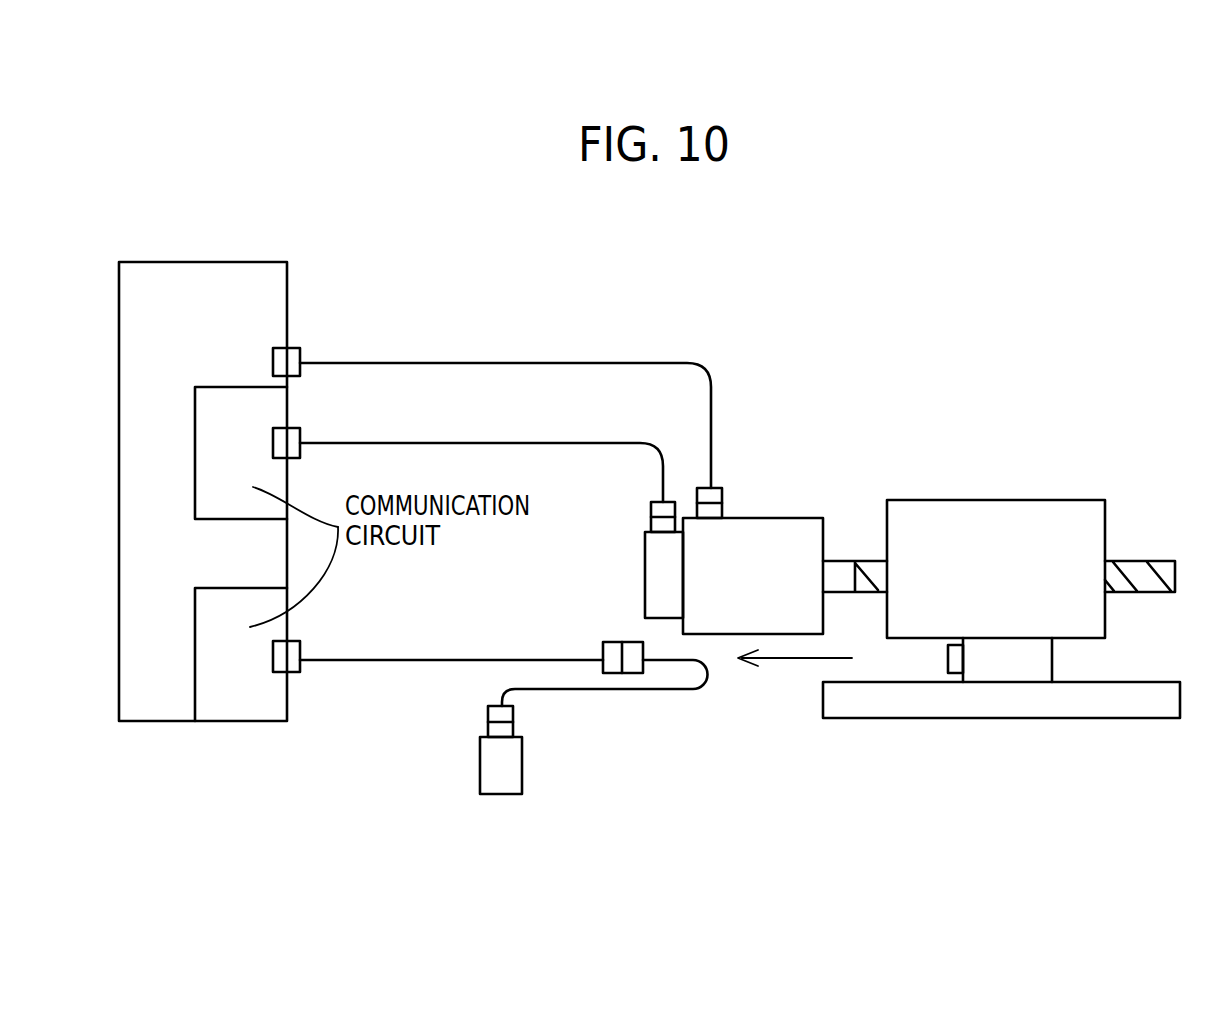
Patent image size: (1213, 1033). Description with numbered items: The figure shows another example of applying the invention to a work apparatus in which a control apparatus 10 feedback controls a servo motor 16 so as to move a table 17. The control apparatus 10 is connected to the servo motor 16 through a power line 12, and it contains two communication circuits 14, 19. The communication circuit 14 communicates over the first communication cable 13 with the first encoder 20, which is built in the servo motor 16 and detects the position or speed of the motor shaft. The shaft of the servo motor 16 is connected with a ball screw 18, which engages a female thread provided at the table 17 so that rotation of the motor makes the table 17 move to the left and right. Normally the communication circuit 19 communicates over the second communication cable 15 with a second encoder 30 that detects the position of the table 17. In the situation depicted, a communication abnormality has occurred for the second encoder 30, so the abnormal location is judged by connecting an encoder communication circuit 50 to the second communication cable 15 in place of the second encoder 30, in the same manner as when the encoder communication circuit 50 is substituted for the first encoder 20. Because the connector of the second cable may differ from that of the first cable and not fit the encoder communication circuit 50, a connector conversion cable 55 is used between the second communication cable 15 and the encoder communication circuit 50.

The control apparatus 10 is at (290, 283).
The power line 12 is at (568, 362).
The first communication cable 13 is at (578, 442).
The communication circuit 14 is at (195, 490).
The second communication cable 15 is at (383, 658).
The servo motor 16 is at (778, 518).
The table 17 is at (1085, 498).
The ball screw 18 is at (1135, 562).
The communication circuit 19 is at (195, 645).
The first encoder 20 is at (645, 548).
The second encoder 30 is at (1040, 663).
The encoder communication circuit 50 is at (522, 772).
The connector conversion cable 55 is at (695, 692).